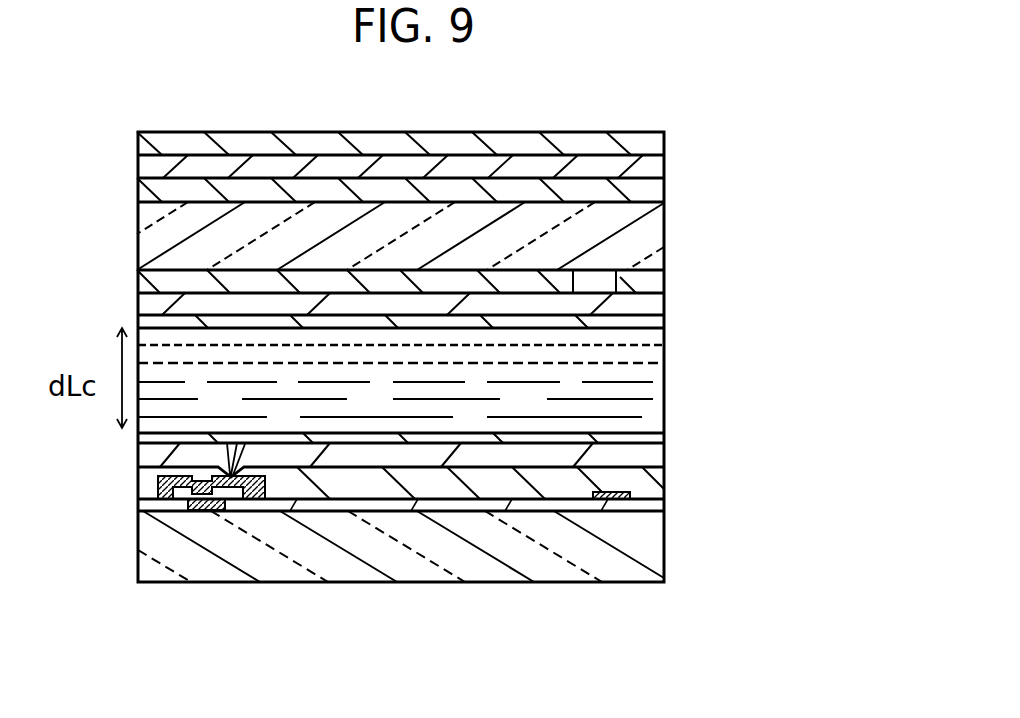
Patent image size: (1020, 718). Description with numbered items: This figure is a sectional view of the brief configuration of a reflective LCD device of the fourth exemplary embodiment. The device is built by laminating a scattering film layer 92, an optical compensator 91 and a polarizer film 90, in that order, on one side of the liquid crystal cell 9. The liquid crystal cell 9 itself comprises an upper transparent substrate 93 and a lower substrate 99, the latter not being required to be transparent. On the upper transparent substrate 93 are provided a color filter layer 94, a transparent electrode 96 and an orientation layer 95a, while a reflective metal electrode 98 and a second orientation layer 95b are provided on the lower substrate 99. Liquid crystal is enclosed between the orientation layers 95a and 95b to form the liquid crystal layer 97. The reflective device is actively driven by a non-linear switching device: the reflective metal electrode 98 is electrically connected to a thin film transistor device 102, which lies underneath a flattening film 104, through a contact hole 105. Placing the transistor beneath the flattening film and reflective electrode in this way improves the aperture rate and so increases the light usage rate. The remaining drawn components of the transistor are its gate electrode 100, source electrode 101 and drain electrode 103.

The liquid crystal cell 9 is at (842, 215).
The polarizer film 90 is at (650, 147).
The optical compensator 91 is at (652, 170).
The scattering film layer 92 is at (652, 188).
The upper transparent substrate 93 is at (640, 232).
The color filter layer 94 is at (652, 284).
The transparent electrode 96 is at (652, 308).
The orientation layer 95a is at (652, 327).
The liquid crystal layer 97 is at (650, 407).
The orientation layer 95b is at (652, 440).
The reflective metal electrode 98 is at (652, 458).
The flattening film 104 is at (652, 493).
The lower substrate 99 is at (652, 557).
The gate electrode 100 is at (203, 511).
The source electrode 101 is at (603, 500).
The thin film transistor device 102 is at (217, 527).
The drain electrode 103 is at (244, 499).
The contact hole 105 is at (234, 456).